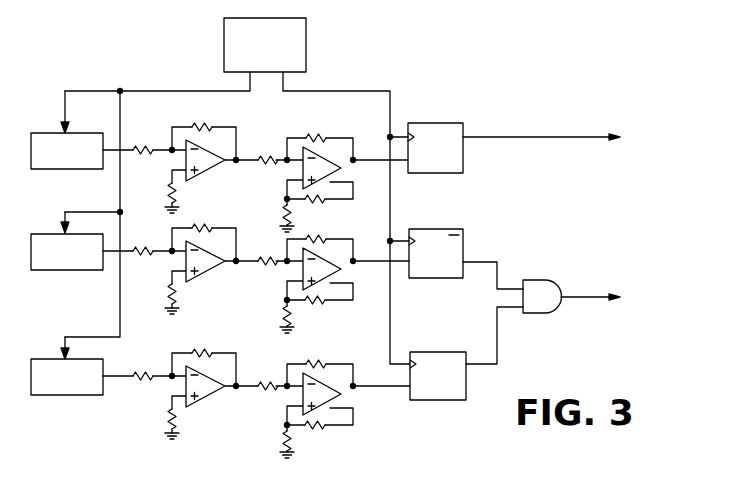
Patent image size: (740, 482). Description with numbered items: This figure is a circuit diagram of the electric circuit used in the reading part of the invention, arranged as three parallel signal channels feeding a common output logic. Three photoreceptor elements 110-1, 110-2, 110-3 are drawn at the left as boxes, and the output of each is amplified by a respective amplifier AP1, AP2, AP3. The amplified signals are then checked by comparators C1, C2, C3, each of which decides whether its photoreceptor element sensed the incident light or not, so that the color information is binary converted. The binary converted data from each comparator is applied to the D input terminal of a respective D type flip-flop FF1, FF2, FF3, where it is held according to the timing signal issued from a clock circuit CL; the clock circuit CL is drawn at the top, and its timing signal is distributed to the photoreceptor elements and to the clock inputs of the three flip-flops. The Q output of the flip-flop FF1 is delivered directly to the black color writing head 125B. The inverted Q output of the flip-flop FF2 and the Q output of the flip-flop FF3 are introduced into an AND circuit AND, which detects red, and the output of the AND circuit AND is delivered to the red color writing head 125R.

The photoreceptor element 110-1 is at (66, 170).
The photoreceptor element 110-2 is at (54, 268).
The photoreceptor element 110-3 is at (55, 393).
The amplifier AP1 is at (210, 170).
The amplifier AP2 is at (180, 269).
The amplifier AP3 is at (180, 394).
The comparator C1 is at (344, 171).
The comparator C2 is at (333, 284).
The comparator C3 is at (334, 409).
The D type flip-flop FF1 is at (445, 173).
The D type flip-flop FF2 is at (438, 278).
The D type flip-flop FF3 is at (438, 400).
The clock circuit CL is at (307, 40).
The AND circuit AND is at (533, 314).
The black color writing head 125B is at (587, 137).
The red color writing head 125R is at (636, 297).